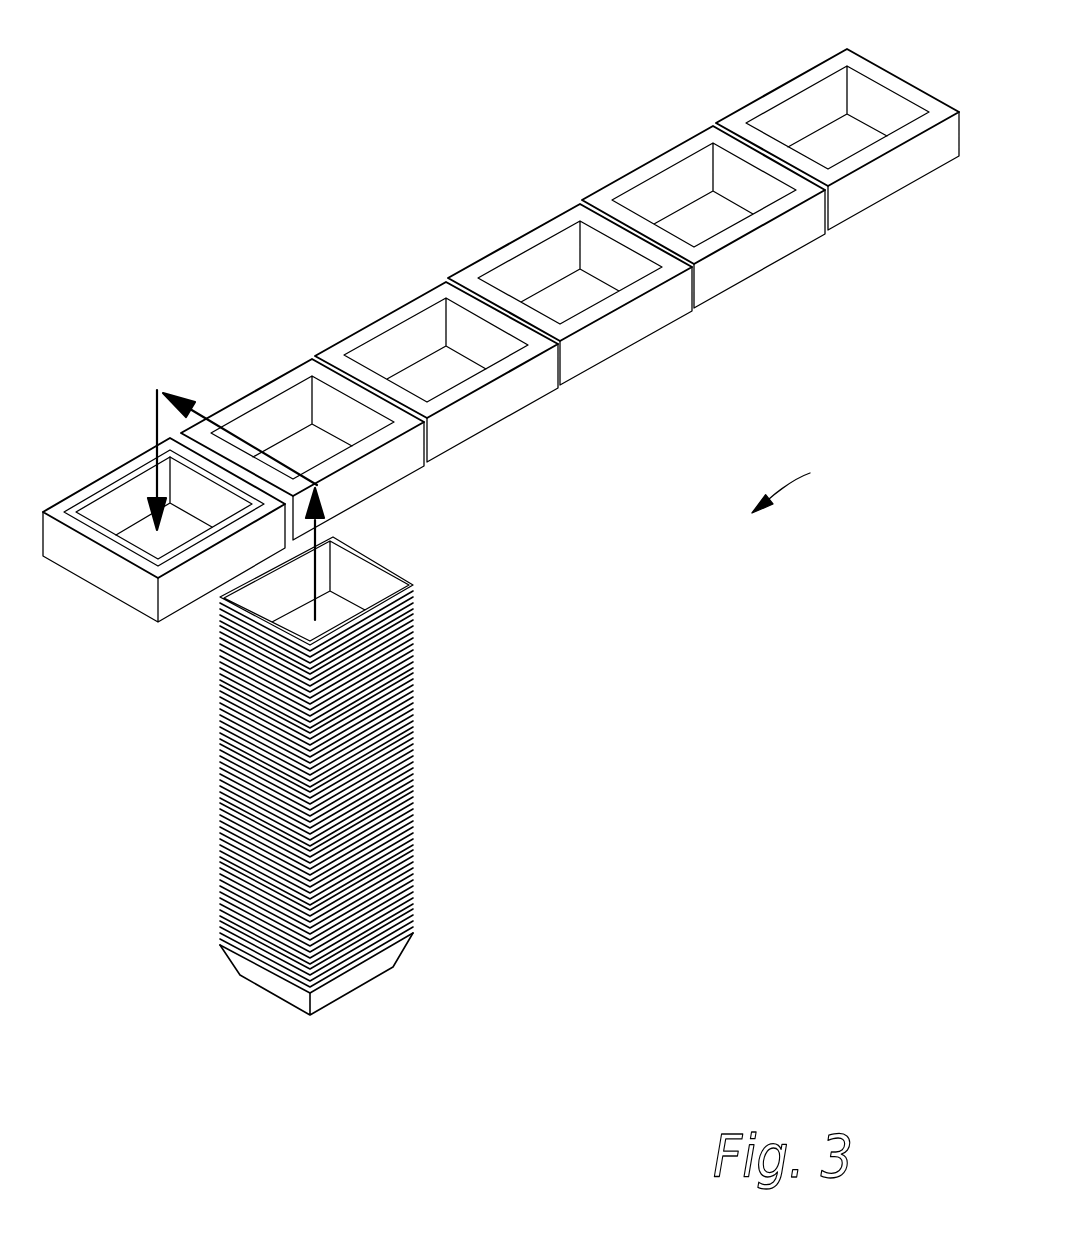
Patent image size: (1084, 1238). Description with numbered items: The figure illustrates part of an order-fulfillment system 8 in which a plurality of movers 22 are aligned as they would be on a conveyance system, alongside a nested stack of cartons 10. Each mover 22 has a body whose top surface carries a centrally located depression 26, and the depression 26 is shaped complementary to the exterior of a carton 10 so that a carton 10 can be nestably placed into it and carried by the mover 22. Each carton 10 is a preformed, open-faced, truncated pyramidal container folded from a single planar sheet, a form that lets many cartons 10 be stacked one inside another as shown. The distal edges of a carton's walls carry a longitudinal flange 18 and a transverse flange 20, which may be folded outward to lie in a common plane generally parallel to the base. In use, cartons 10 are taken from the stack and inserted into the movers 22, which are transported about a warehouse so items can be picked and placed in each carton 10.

The order-fulfillment system 8 is at (791, 481).
The carton 10 is at (280, 695).
The longitudinal flange 18 is at (85, 493).
The transverse flange 20 is at (123, 548).
The mover 22 is at (485, 432).
The depression 26 is at (285, 397).